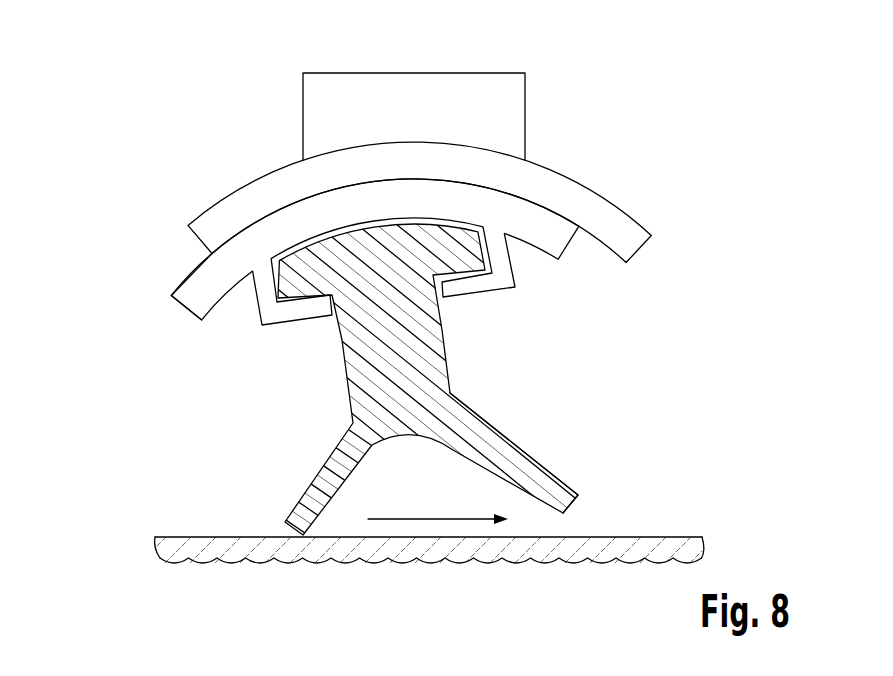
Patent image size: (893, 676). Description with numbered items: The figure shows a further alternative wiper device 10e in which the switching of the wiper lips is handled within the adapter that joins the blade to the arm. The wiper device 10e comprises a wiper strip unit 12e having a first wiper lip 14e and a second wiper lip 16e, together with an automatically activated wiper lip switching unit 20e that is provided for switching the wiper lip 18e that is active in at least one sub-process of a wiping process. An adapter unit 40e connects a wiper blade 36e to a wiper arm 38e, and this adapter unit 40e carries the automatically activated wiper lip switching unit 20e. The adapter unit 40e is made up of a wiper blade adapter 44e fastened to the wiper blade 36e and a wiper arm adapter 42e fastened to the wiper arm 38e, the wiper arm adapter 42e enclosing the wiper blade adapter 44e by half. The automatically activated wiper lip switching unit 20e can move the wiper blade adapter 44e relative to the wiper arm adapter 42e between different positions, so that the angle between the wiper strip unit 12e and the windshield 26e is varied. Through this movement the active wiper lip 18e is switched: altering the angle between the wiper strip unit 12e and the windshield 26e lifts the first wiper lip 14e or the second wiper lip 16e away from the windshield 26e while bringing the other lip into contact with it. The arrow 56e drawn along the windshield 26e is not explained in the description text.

The wiper device 10e is at (138, 84).
The wiper strip unit 12e is at (443, 279).
The first wiper lip 14e is at (302, 509).
The second wiper lip 16e is at (540, 480).
The wiper lip 18e is at (314, 479).
The automatically activated wiper lip switching unit 20e is at (271, 118).
The windshield 26e is at (627, 548).
The wiper blade 36e is at (554, 282).
The wiper arm 38e is at (414, 93).
The adapter unit 40e is at (568, 126).
The wiper arm adapter 42e is at (472, 165).
The wiper blade adapter 44e is at (190, 292).
The drive direction 56e is at (416, 519).